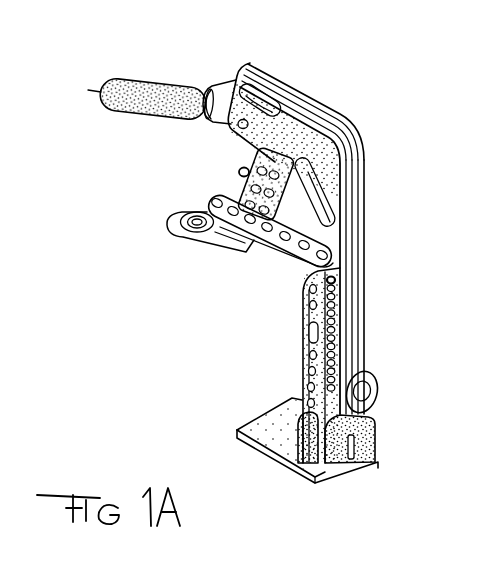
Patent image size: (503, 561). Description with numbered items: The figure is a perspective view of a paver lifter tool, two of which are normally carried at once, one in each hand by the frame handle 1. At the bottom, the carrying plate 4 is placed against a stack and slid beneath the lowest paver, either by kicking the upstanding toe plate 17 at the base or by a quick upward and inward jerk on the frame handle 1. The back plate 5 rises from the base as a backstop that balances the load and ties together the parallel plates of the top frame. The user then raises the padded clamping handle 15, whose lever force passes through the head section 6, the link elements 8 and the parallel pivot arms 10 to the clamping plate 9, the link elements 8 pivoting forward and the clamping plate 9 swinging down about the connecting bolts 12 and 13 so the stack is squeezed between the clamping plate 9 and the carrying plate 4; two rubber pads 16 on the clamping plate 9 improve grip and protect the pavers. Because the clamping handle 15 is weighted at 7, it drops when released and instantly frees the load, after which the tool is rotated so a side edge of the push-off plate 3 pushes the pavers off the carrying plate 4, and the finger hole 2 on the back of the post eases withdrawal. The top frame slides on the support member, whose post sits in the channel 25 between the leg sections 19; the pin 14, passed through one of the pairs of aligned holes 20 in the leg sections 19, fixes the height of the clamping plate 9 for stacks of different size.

The frame handle 1 is at (285, 80).
The finger hole 2 is at (378, 392).
The push-off plate 3 is at (287, 427).
The carrying plate 4 is at (263, 457).
The back plate 5 is at (303, 306).
The head section 6 is at (203, 122).
The weight 7 is at (218, 92).
The link elements 8 is at (239, 167).
The clamping plate 9 is at (165, 229).
The pivot arms 10 is at (243, 183).
The connecting bolt 12 is at (258, 122).
The connecting bolt 13 is at (246, 228).
The pin 14 is at (337, 284).
The clamping handle 15 is at (96, 92).
The rubber pads 16 is at (183, 219).
The toe plate 17 is at (377, 440).
The leg sections 19 is at (310, 408).
The aligned holes 20 is at (335, 297).
The channel 25 is at (352, 214).